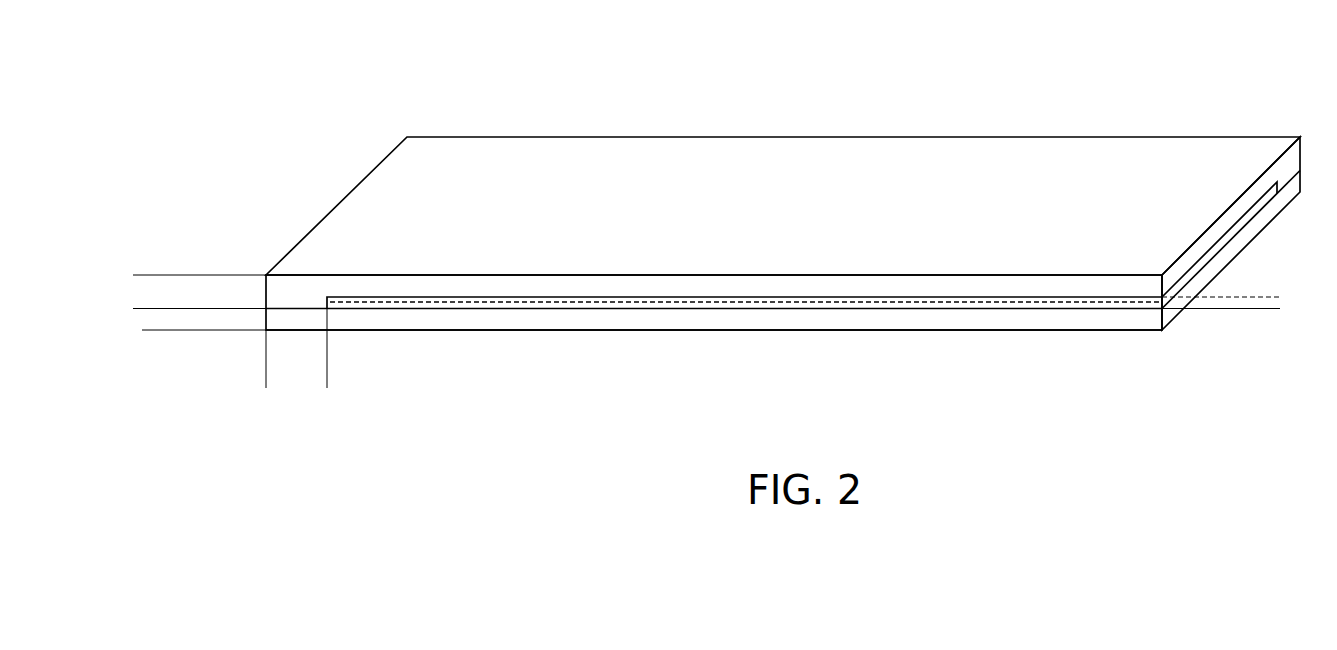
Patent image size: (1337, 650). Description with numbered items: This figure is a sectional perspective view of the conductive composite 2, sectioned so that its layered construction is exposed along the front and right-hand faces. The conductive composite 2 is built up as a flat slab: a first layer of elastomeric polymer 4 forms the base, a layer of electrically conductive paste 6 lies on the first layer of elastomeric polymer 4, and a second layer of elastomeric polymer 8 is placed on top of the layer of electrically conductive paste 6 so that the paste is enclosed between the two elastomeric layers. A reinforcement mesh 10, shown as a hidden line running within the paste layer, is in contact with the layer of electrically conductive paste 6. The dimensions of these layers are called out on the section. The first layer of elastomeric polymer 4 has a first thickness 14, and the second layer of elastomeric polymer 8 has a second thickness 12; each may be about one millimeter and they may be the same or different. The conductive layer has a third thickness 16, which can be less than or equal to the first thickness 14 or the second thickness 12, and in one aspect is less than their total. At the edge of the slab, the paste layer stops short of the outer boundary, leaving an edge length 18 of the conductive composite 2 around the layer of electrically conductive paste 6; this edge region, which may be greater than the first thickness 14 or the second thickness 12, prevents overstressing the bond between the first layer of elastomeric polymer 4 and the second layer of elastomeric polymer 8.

The conductive composite 2 is at (783, 225).
The first layer of elastomeric polymer 4 is at (783, 278).
The layer of electrically conductive paste 6 is at (783, 289).
The second layer of elastomeric polymer 8 is at (802, 245).
The reinforcement mesh 10 is at (746, 353).
The second thickness 12 is at (144, 243).
The first thickness 14 is at (187, 275).
The third thickness 16 is at (1273, 273).
The edge length 18 is at (360, 382).